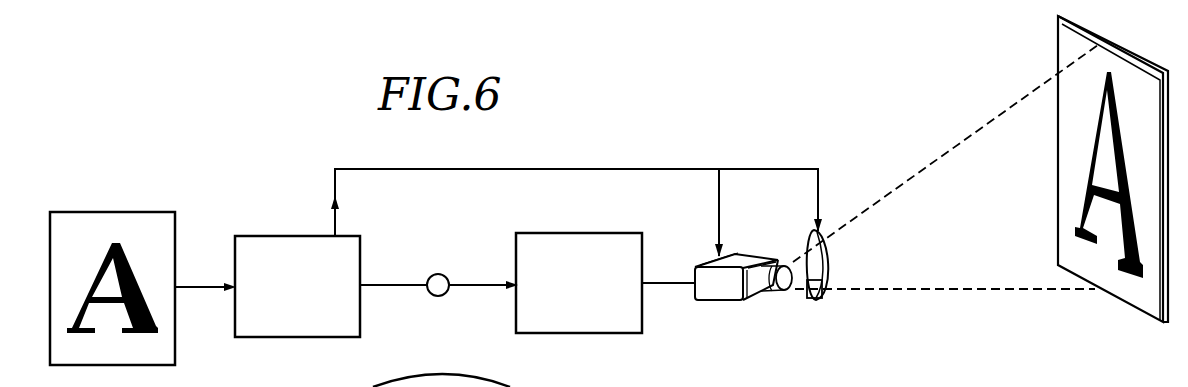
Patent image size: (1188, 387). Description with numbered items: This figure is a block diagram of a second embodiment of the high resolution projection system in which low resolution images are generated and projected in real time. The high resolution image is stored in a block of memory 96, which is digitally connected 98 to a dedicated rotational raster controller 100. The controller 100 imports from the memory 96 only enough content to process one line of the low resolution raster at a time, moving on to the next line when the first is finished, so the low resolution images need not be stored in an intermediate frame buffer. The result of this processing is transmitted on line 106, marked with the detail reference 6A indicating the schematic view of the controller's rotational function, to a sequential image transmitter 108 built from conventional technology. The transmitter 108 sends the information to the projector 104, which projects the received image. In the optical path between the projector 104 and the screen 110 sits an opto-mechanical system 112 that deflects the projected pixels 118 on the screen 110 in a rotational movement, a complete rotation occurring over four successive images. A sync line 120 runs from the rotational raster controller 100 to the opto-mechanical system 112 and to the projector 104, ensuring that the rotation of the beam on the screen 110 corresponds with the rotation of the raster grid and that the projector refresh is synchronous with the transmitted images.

The block of memory 96 is at (113, 212).
The digital connection 98 is at (192, 287).
The dedicated rotational raster controller 100 is at (275, 236).
The line 106 is at (387, 285).
The detail view reference 6A is at (447, 277).
The sequential image transmitter 108 is at (558, 233).
The sync line 120 is at (637, 169).
The projector 104 is at (718, 288).
The opto-mechanical system 112 is at (815, 300).
The projected pixels 118 is at (920, 169).
The screen 110 is at (1126, 293).